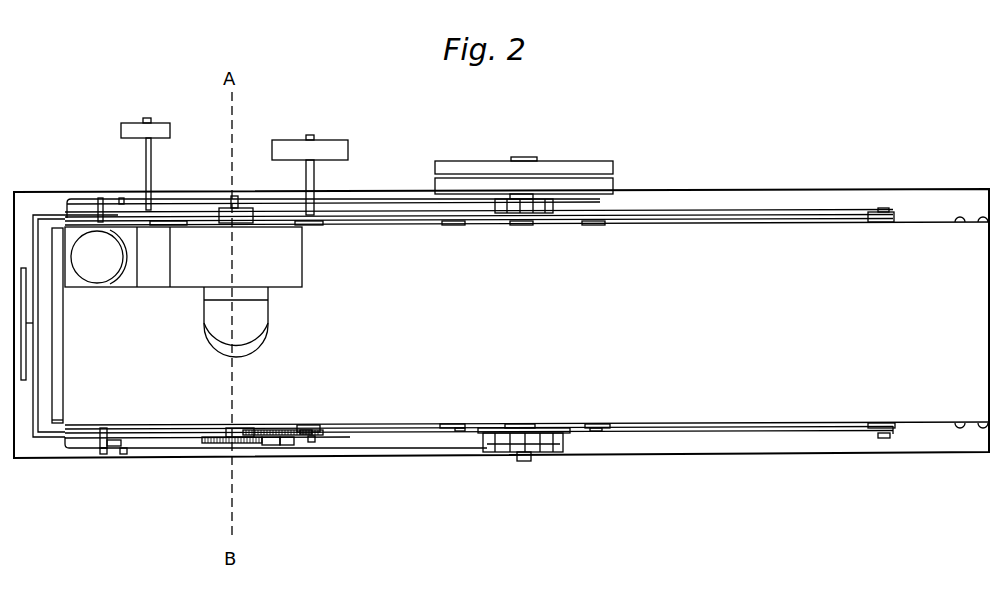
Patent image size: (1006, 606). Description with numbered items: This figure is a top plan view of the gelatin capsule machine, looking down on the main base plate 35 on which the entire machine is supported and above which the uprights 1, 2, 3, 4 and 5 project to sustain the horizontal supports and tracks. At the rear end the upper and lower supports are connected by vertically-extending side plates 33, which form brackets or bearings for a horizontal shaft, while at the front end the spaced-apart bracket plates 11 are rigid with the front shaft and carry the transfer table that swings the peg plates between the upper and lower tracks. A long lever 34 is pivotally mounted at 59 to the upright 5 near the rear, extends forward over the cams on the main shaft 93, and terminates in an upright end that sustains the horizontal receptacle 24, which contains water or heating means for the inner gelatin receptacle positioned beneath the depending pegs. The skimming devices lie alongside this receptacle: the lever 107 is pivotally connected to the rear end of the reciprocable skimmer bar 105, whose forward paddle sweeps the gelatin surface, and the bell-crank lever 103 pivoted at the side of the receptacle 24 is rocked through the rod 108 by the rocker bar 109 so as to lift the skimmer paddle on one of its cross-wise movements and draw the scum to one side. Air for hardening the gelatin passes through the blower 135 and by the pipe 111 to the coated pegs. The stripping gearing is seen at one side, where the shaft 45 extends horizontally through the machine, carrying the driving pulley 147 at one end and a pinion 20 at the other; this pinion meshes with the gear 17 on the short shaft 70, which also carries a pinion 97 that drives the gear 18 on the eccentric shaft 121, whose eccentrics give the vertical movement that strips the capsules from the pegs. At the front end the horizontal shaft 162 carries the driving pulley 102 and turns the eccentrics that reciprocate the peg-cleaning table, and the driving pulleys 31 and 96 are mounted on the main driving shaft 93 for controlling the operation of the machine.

The upright 1 is at (312, 425).
The upright 2 is at (462, 429).
The upright 3 is at (520, 425).
The upright 4 is at (600, 430).
The upright 5 is at (897, 427).
The bracket plates 11 is at (57, 228).
The gear 17 is at (272, 400).
The gear 18 is at (205, 443).
The pinion 20 is at (322, 427).
The horizontal receptacle 24 is at (43, 213).
The driving pulley 31 is at (613, 167).
The side plates 33 is at (975, 217).
The long lever 34 is at (730, 215).
The main base plate 35 is at (770, 453).
The shaft 45 is at (308, 137).
The pivot 59 is at (878, 208).
The short shaft 70 is at (270, 445).
The main shaft 93 is at (518, 157).
The driving pulley 96 is at (613, 181).
The pinion 97 is at (285, 445).
The driving pulley 102 is at (143, 119).
The bell-crank lever 103 is at (115, 446).
The skimmer bar 105 is at (157, 447).
The lever 107 is at (500, 452).
The rod 108 is at (102, 448).
The rocker bar 109 is at (548, 452).
The pipe 111 is at (215, 312).
The eccentric shaft 121 is at (238, 205).
The blower 135 is at (274, 268).
The driving pulley 147 is at (348, 150).
The horizontal shaft 162 is at (146, 155).